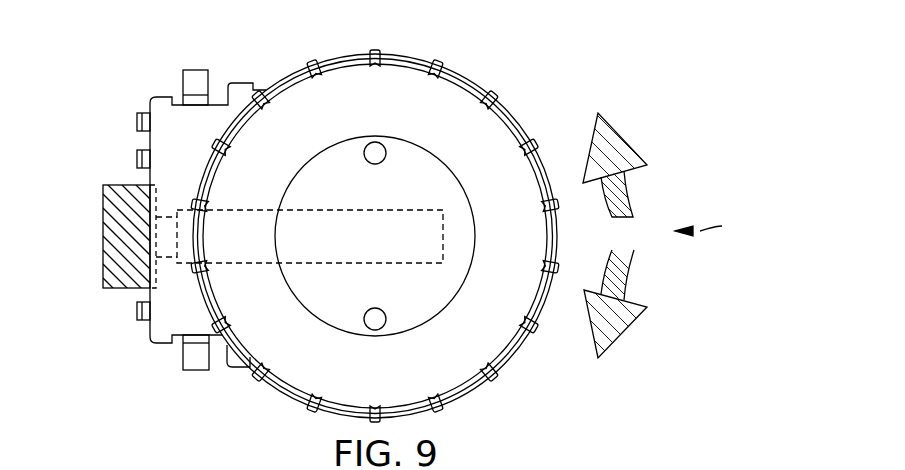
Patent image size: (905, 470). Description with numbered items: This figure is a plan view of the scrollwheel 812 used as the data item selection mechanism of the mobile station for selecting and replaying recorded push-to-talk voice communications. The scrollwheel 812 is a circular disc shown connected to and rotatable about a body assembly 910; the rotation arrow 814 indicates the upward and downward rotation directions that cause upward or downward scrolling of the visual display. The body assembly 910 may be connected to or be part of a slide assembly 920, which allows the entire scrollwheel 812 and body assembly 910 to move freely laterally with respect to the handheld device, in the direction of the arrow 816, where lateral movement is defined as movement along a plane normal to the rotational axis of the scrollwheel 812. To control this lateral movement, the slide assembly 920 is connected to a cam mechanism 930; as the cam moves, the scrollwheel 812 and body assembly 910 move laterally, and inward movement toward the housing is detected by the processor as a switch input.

The scrollwheel 812 is at (508, 108).
The rotation arrow 814 is at (613, 237).
The arrow indicating lateral scrollwheel movement 816 is at (727, 226).
The body assembly 910 is at (158, 96).
The slide assembly 920 is at (299, 236).
The cam mechanism 930 is at (125, 290).